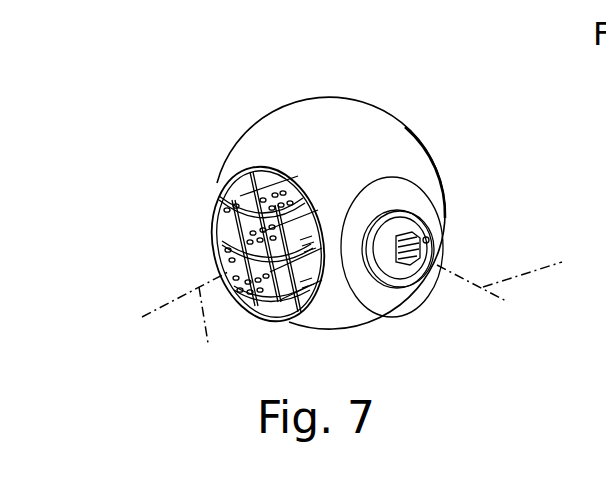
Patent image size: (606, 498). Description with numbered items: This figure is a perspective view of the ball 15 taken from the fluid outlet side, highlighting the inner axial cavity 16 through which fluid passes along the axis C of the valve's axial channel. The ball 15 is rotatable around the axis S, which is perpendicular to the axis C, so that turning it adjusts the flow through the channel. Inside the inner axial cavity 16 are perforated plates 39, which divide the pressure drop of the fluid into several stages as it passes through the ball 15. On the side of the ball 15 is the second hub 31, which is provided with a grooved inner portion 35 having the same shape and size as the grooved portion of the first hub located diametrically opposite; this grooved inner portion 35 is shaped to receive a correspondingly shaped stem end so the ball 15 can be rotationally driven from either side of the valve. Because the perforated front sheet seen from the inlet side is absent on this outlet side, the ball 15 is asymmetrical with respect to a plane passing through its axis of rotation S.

The ball 15 is at (251, 116).
The inner axial cavity 16 is at (196, 237).
The perforated plates 39 is at (267, 205).
The second hub 31 is at (425, 225).
The grooved inner portion 35 is at (404, 250).
The axis of the axial channel C is at (186, 323).
The axis of rotation of the ball S is at (512, 275).